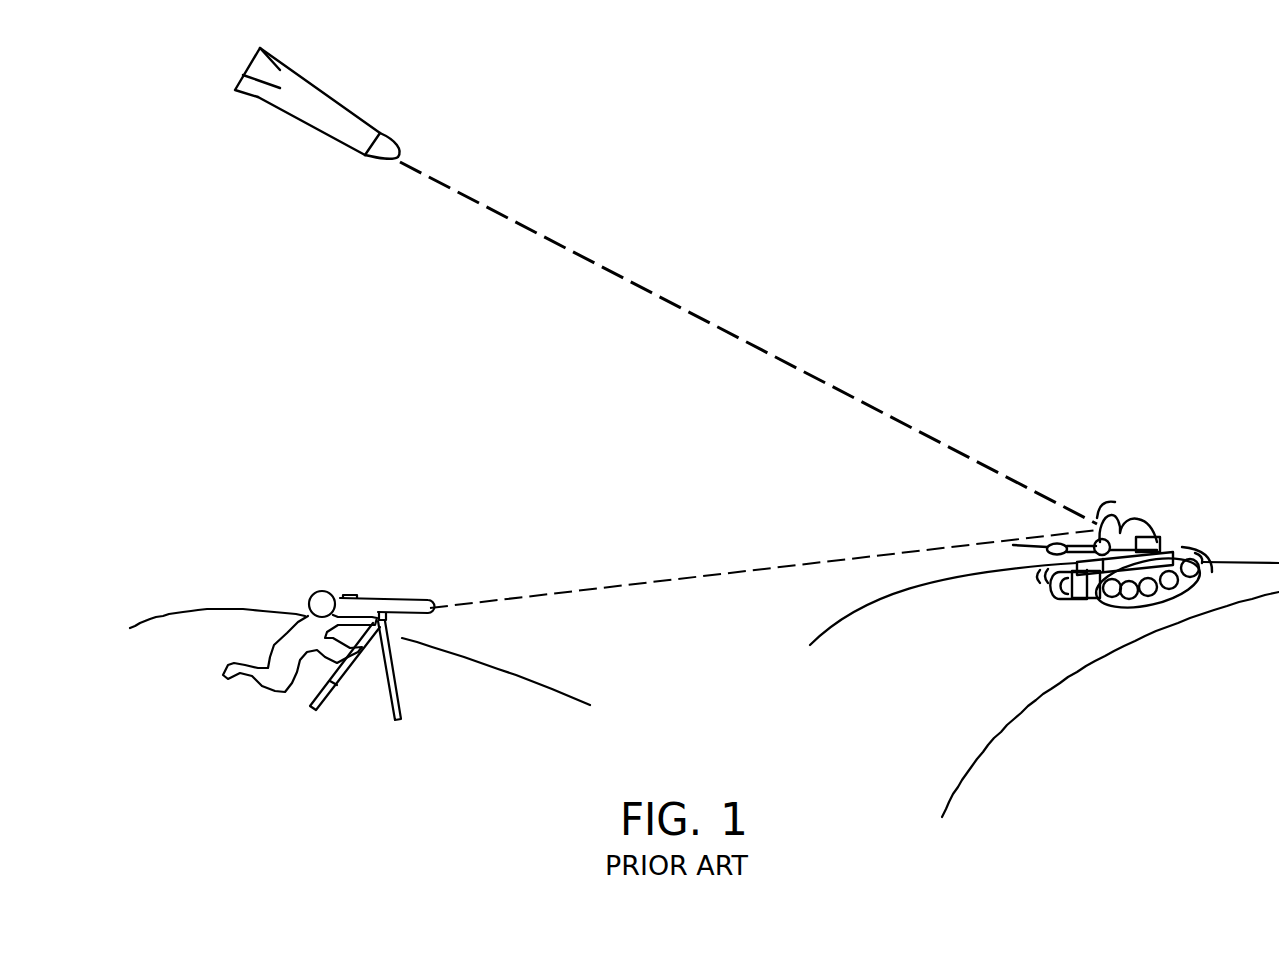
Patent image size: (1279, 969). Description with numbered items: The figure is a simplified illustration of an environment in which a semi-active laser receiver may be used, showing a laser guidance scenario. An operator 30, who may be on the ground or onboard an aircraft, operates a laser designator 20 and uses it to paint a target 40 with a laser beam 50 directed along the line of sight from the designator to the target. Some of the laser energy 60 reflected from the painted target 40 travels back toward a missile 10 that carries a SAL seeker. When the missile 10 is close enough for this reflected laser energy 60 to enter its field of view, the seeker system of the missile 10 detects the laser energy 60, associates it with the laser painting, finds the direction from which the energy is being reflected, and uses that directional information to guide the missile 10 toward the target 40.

The missile 10 is at (308, 128).
The laser designator 20 is at (407, 596).
The operator 30 is at (282, 693).
The target 40 is at (1147, 518).
The laser beam 50 is at (750, 572).
The laser energy 60 is at (820, 380).